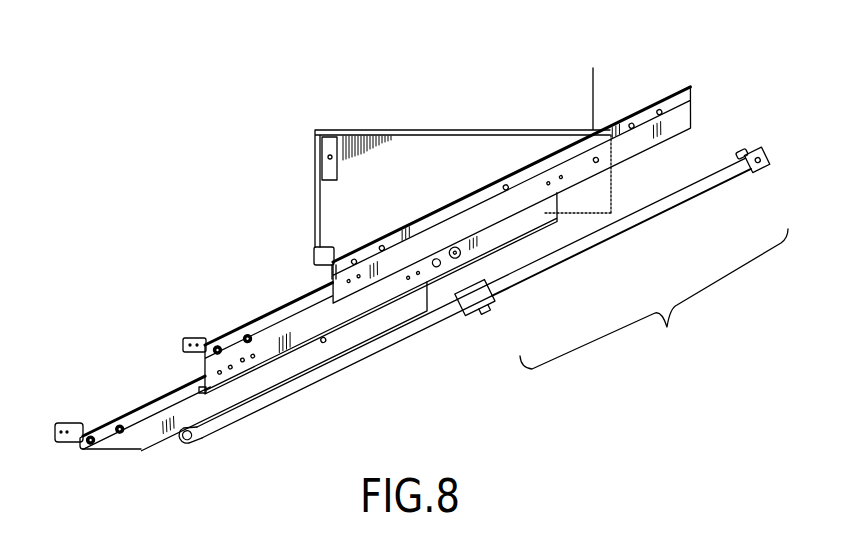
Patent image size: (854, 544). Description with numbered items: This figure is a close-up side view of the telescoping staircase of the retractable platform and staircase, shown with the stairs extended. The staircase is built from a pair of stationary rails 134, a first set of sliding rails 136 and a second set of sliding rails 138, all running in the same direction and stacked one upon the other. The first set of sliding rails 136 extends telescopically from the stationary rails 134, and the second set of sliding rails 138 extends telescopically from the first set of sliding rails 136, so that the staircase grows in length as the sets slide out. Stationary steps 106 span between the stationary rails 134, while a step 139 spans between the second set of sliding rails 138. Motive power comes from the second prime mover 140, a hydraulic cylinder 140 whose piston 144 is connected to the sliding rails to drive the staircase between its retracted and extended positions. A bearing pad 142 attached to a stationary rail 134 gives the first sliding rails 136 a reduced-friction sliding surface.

The stationary steps 106 is at (454, 129).
The stationary rails 134 is at (665, 102).
The first set of sliding rails 136 is at (272, 327).
The second set of sliding rails 138 is at (155, 407).
The step 139 is at (67, 425).
The second prime mover 140 is at (654, 299).
The bearing pad 142 is at (658, 214).
The piston 144 is at (407, 333).